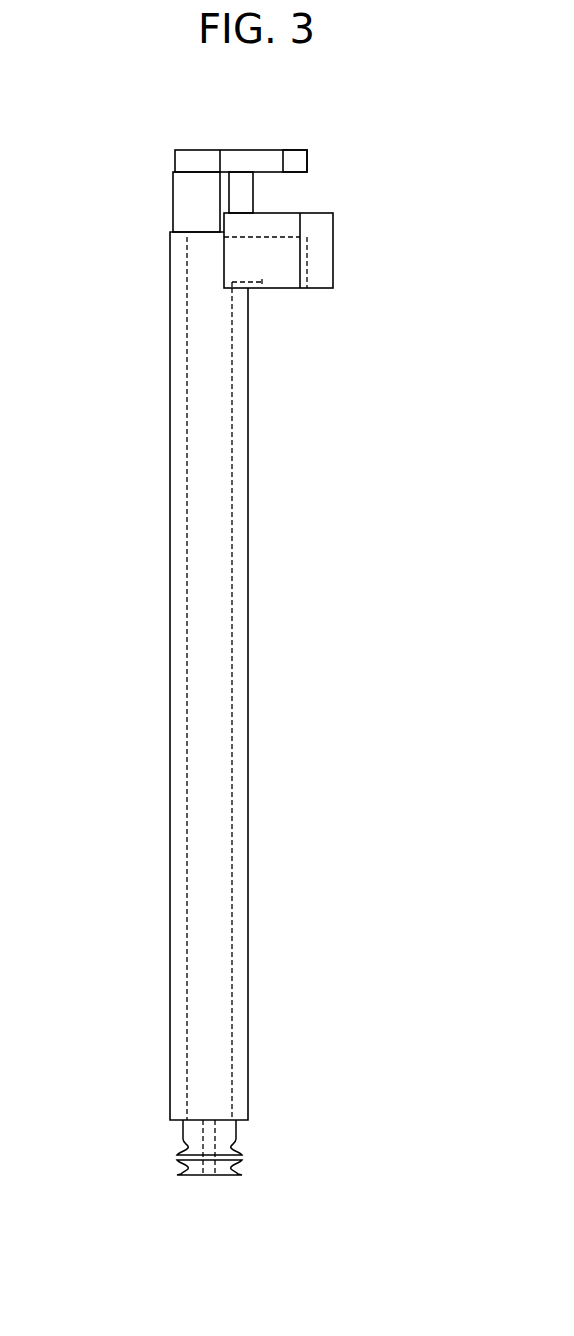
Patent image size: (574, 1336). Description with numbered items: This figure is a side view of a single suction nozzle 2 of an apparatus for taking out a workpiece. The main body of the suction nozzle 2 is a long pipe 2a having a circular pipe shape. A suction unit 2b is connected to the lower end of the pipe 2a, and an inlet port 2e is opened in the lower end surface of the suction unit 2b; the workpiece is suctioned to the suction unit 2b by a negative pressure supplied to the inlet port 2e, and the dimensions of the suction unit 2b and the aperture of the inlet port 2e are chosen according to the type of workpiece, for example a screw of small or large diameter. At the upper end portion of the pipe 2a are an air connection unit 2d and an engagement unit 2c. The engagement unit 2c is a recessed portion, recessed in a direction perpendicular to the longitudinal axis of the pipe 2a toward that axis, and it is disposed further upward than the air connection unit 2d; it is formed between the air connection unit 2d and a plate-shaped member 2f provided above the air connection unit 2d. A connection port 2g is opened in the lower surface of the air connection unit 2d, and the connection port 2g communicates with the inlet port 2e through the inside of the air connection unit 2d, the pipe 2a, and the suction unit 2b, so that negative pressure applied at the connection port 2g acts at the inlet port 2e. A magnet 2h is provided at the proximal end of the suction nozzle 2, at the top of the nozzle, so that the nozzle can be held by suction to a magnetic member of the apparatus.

The suction nozzle 2 is at (123, 339).
The pipe 2a is at (170, 600).
The suction unit 2b is at (185, 1145).
The engagement unit 2c is at (263, 173).
The air connection unit 2d is at (333, 252).
The inlet port 2e is at (208, 1176).
The plate-shaped member 2f is at (307, 159).
The connection port 2g is at (282, 290).
The magnet 2h is at (176, 158).